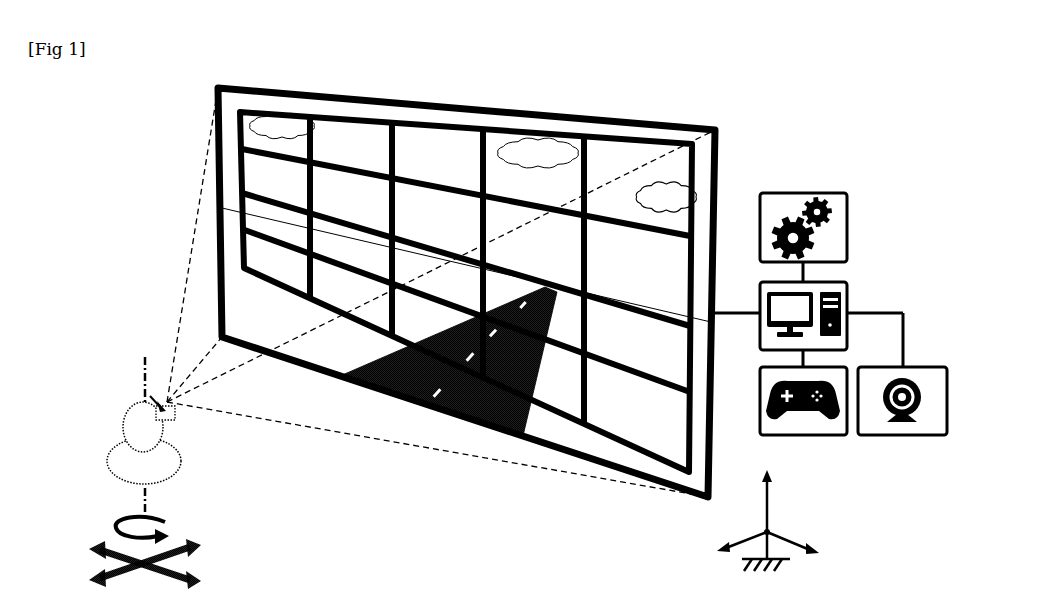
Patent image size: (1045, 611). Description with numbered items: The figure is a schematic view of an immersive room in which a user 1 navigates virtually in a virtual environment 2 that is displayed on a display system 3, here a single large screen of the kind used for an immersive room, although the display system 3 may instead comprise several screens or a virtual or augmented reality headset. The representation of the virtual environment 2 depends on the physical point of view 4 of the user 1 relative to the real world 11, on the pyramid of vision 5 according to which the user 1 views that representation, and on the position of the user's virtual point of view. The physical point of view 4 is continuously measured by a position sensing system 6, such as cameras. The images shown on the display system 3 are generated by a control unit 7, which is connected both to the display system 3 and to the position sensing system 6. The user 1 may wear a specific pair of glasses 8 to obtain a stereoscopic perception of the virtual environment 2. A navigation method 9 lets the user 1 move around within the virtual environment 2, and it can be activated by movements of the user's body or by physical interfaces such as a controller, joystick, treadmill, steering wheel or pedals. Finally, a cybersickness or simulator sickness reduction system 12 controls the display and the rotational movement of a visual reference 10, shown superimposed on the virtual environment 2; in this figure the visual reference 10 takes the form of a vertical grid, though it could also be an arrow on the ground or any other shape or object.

The user 1 is at (123, 427).
The virtual environment 2 is at (557, 388).
The display system 3 is at (461, 405).
The physical point of view 4 is at (107, 539).
The pyramid of vision 5 is at (253, 357).
The position sensing system 6 is at (903, 435).
The control unit 7 is at (847, 292).
The pair of glasses 8 is at (176, 420).
The navigation method 9 is at (803, 435).
The visual reference 10 is at (633, 458).
The real world 11 is at (770, 508).
The cybersickness or simulator sickness reduction system 12 is at (805, 193).